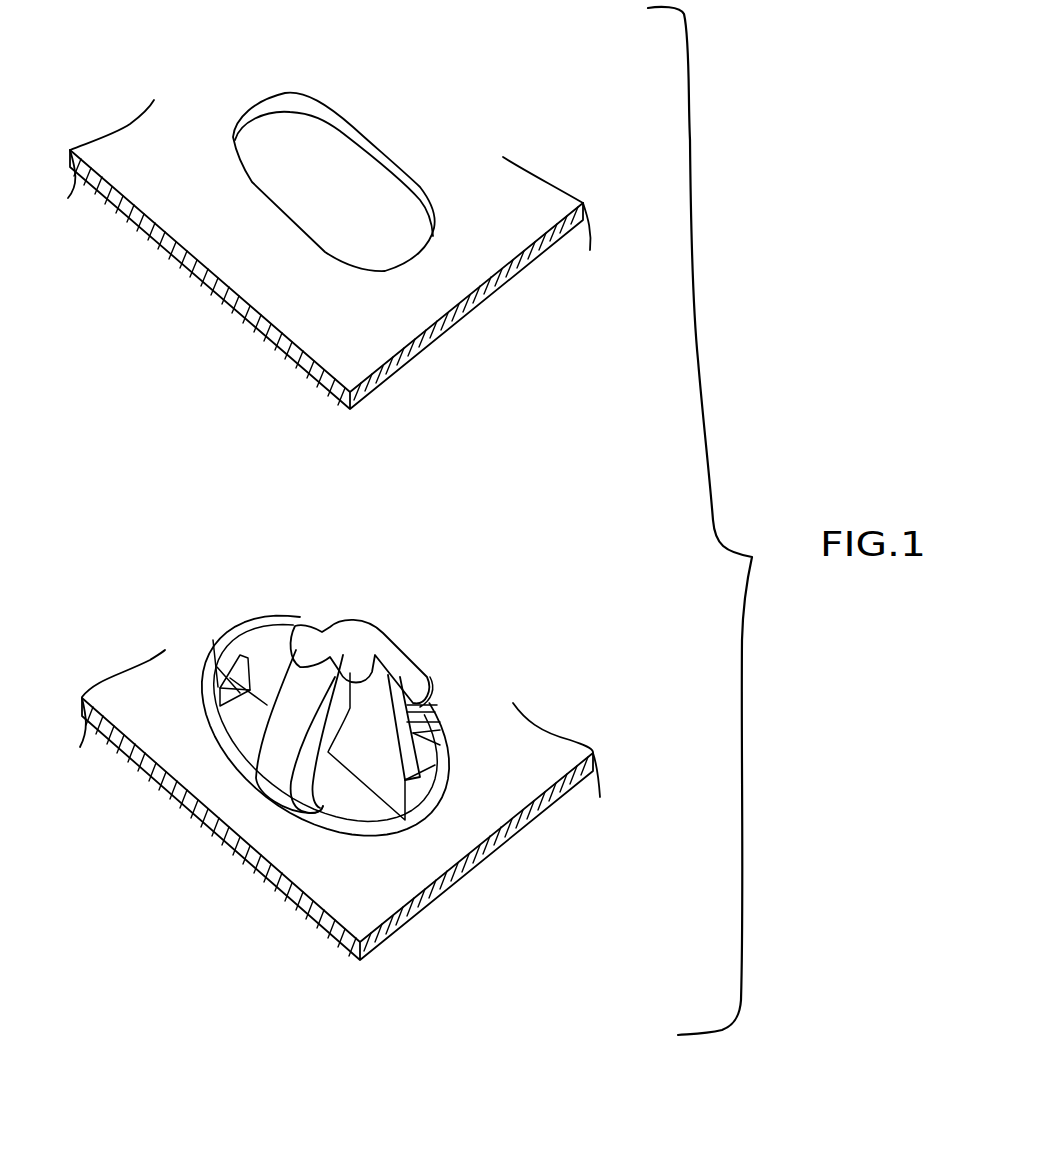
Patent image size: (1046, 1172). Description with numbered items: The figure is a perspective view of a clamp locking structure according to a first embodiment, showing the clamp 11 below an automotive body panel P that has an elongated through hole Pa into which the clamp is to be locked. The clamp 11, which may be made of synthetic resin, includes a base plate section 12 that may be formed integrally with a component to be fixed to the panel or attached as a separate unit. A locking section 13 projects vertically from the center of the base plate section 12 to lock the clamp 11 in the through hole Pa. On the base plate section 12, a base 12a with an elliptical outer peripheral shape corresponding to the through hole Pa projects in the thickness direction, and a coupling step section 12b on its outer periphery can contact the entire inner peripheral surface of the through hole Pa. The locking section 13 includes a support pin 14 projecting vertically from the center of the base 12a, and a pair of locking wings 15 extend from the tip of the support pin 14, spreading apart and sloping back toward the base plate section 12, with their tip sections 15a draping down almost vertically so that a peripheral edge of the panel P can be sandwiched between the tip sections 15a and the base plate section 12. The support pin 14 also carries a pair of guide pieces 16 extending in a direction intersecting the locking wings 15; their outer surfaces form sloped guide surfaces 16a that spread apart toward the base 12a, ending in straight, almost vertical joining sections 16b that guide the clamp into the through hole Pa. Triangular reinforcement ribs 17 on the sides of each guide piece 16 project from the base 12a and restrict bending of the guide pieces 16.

The automotive body panel P is at (472, 202).
The through hole Pa is at (352, 138).
The clamp 11 is at (453, 698).
The base plate section 12 is at (503, 755).
The base 12a is at (350, 800).
The coupling step section 12b is at (238, 753).
The locking section 13 is at (402, 638).
The support pin 14 is at (321, 635).
The locking wings 15 is at (425, 663).
The tip sections 15a is at (297, 803).
The guide pieces 16 is at (267, 652).
The sloped guide surfaces 16a is at (280, 627).
The joining sections 16b is at (415, 800).
The triangular reinforcement ribs 17 is at (250, 715).